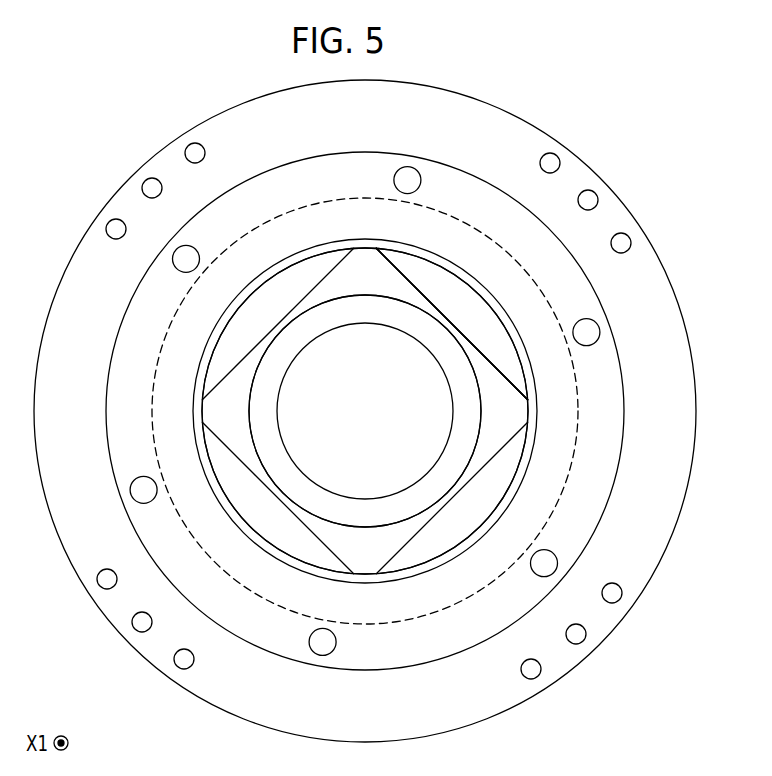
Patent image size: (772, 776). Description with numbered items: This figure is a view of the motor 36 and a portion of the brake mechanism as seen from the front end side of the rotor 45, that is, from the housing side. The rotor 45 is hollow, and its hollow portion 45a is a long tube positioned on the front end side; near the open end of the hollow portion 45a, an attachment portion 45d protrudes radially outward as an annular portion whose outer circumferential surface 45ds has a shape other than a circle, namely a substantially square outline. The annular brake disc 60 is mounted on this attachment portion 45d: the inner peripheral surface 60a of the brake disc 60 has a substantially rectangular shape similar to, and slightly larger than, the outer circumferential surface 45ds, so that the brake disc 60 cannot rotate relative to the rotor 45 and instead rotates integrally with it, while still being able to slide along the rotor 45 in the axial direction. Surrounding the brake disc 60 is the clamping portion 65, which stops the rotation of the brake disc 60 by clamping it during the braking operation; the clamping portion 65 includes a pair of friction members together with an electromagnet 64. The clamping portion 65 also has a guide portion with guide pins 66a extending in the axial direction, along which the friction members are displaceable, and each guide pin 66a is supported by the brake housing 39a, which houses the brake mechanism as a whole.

The motor 36 is at (458, 310).
The brake housing 39a is at (572, 172).
The rotor 45 is at (482, 348).
The hollow portion 45a is at (410, 502).
The attachment portion 45d is at (395, 290).
The outer circumferential surface 45ds is at (423, 291).
The brake disc 60 is at (488, 490).
The inner peripheral surface 60a is at (462, 340).
The electromagnet 64 is at (603, 388).
The clamping portion 65 is at (618, 462).
The guide pins 66a is at (323, 648).